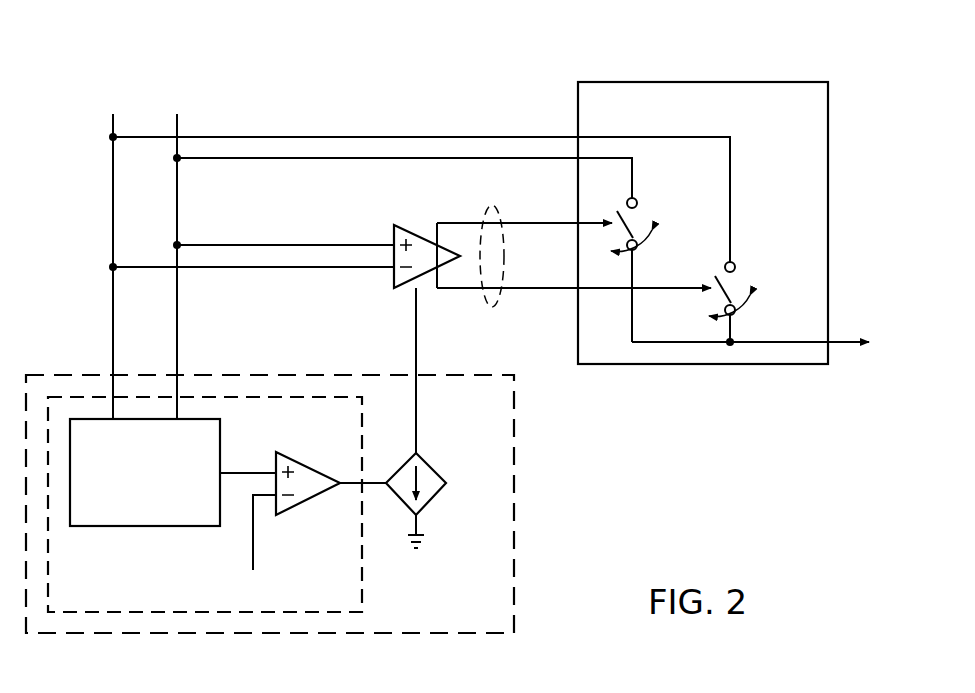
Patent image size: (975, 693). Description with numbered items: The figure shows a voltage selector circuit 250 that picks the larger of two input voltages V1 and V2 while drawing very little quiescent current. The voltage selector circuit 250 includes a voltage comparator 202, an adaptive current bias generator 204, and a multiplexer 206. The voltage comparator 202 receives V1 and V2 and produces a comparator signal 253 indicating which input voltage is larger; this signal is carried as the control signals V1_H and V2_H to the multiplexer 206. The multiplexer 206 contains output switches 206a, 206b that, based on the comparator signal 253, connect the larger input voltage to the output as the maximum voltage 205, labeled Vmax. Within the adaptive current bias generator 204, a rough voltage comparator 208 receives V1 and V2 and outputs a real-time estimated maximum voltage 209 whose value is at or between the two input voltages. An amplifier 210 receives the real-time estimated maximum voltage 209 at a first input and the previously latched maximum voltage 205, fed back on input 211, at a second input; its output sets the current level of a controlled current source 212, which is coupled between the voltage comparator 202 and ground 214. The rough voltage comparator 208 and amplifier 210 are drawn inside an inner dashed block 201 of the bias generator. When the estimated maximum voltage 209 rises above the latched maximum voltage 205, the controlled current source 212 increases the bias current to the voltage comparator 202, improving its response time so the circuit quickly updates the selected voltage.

The voltage selector circuit 250 is at (296, 87).
The voltage comparator 202 is at (416, 224).
The comparator signal 253 is at (492, 307).
The multiplexer (MUX) 206 is at (750, 81).
The output switch 206a is at (738, 280).
The output switch 206b is at (640, 215).
The maximum voltage (VMax) 205 is at (843, 346).
The adaptive current bias generator 204 is at (516, 532).
The rough comparator circuit 201 is at (366, 582).
The rough voltage comparator 208 is at (145, 527).
The real-time estimated maximum voltage 209 is at (241, 472).
The amplifier 210 is at (306, 503).
The input 211 is at (251, 545).
The controlled current source 212 is at (432, 468).
The ground 214 is at (426, 541).